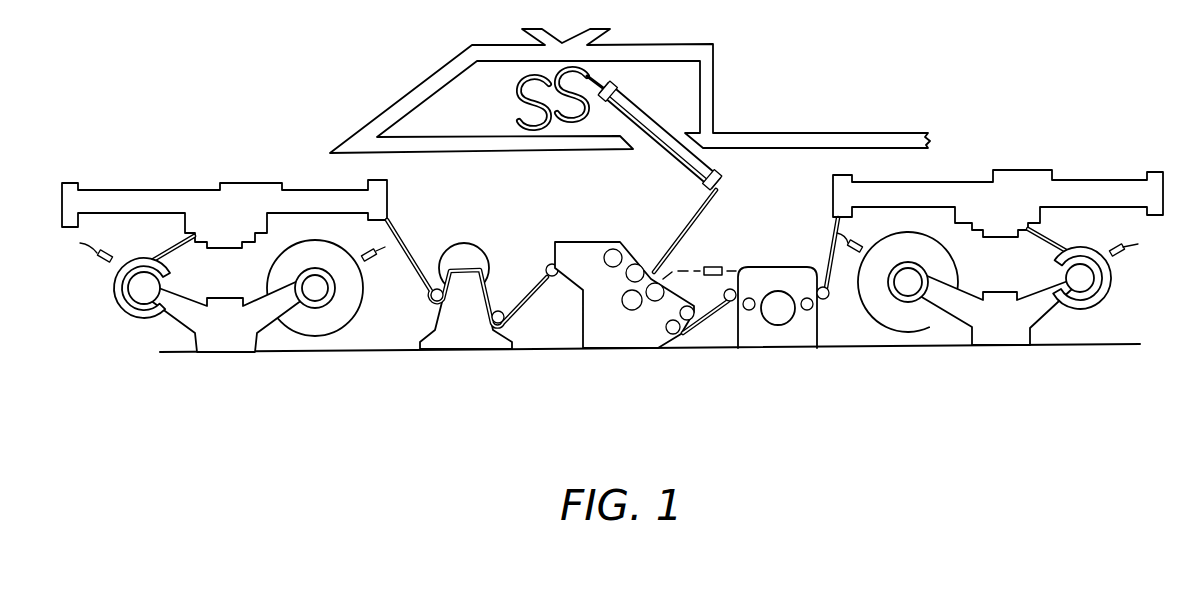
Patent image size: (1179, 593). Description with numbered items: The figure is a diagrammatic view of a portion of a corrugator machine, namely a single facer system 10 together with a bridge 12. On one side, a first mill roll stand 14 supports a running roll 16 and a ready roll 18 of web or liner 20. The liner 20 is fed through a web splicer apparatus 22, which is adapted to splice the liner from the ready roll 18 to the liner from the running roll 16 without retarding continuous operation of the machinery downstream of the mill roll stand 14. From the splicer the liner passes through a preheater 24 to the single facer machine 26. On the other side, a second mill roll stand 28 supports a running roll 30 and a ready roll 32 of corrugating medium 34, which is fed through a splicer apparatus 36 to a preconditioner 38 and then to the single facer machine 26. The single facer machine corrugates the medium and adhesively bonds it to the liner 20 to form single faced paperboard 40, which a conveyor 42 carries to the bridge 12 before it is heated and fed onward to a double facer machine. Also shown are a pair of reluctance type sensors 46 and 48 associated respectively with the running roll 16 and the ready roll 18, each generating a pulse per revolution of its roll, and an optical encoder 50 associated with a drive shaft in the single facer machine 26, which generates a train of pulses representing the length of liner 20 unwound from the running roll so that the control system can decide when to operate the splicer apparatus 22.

The single facer system 10 is at (572, 362).
The bridge 12 is at (433, 83).
The first mill roll stand 14 is at (1008, 330).
The running roll 16 is at (1108, 287).
The ready roll 18 is at (892, 318).
The liner 20 is at (1055, 245).
The web splicer apparatus 22 is at (1031, 181).
The preheater 24 is at (790, 337).
The single facer machine 26 is at (642, 335).
The second mill roll stand 28 is at (208, 343).
The running roll 30 is at (138, 313).
The ready roll 32 is at (335, 322).
The corrugating medium 34 is at (176, 246).
The splicer apparatus 36 is at (241, 189).
The preconditioner 38 is at (458, 338).
The single faced paperboard 40 is at (690, 222).
The conveyor 42 is at (653, 150).
The reluctance type sensor 46 is at (1113, 244).
The reluctance type sensor 48 is at (857, 248).
The optical encoder 50 is at (712, 266).